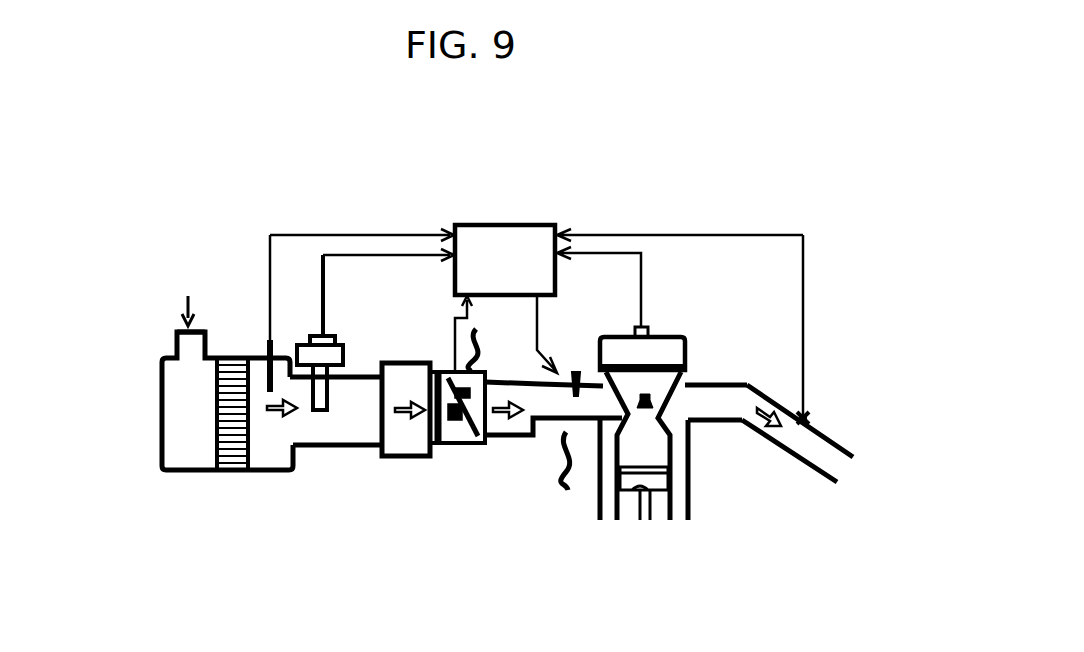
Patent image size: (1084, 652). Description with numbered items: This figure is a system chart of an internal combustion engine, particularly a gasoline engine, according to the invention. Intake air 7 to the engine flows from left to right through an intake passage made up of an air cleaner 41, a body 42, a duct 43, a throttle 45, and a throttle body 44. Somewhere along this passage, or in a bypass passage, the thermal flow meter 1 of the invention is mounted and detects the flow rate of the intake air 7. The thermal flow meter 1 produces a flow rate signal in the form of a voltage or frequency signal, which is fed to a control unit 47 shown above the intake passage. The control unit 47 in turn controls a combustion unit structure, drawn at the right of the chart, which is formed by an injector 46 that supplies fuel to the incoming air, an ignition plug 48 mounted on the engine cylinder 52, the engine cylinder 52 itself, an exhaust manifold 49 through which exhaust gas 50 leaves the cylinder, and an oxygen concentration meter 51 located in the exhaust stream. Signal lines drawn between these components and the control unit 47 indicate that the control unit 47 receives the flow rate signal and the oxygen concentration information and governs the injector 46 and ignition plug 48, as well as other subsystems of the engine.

The thermal flow meter 1 is at (348, 347).
The intake air 7 is at (176, 323).
The air cleaner 41 is at (162, 451).
The body 42 is at (308, 450).
The duct 43 is at (388, 452).
The throttle body 44 is at (445, 452).
The throttle 45 is at (473, 450).
The injector 46 is at (576, 376).
The control unit 47 is at (506, 225).
The ignition plug 48 is at (648, 327).
The exhaust manifold 49 is at (713, 384).
The exhaust gas 50 is at (777, 400).
The oxygen concentration meter 51 is at (808, 418).
The engine cylinder 52 is at (627, 513).